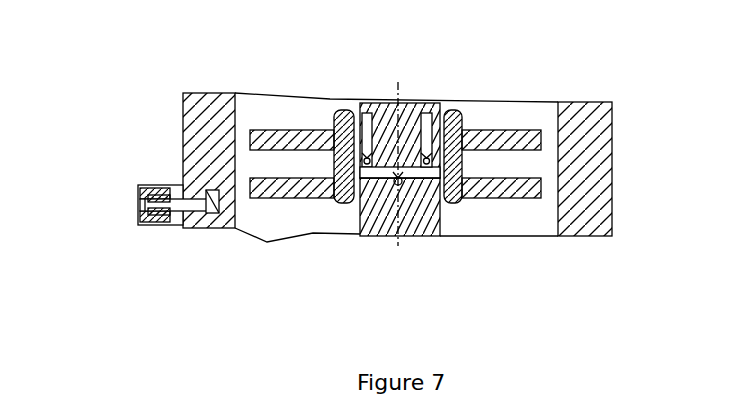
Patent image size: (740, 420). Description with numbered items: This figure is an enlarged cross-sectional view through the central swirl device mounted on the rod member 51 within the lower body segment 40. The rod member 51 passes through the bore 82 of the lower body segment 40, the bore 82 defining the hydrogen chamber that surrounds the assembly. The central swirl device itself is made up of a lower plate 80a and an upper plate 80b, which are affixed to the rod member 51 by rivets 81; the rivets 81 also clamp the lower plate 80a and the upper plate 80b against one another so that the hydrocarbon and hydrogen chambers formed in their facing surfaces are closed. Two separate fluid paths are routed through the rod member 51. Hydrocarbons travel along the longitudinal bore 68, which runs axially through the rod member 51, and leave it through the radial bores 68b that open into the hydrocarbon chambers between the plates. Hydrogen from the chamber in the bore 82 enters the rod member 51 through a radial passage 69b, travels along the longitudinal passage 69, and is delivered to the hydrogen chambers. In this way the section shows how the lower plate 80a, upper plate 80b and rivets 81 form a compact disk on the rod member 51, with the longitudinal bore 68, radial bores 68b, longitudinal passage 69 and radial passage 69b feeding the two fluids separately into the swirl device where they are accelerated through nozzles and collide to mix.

The lower body segment 40 is at (183, 167).
The rod member 51 is at (402, 137).
The longitudinal bore 68 is at (440, 160).
The radial bores 68b is at (420, 173).
The longitudinal passage 69 is at (362, 113).
The radial passage 69b is at (360, 197).
The lower plate 80a is at (298, 183).
The upper plate 80b is at (542, 140).
The rivets 81 is at (334, 131).
The bore 82 is at (183, 133).